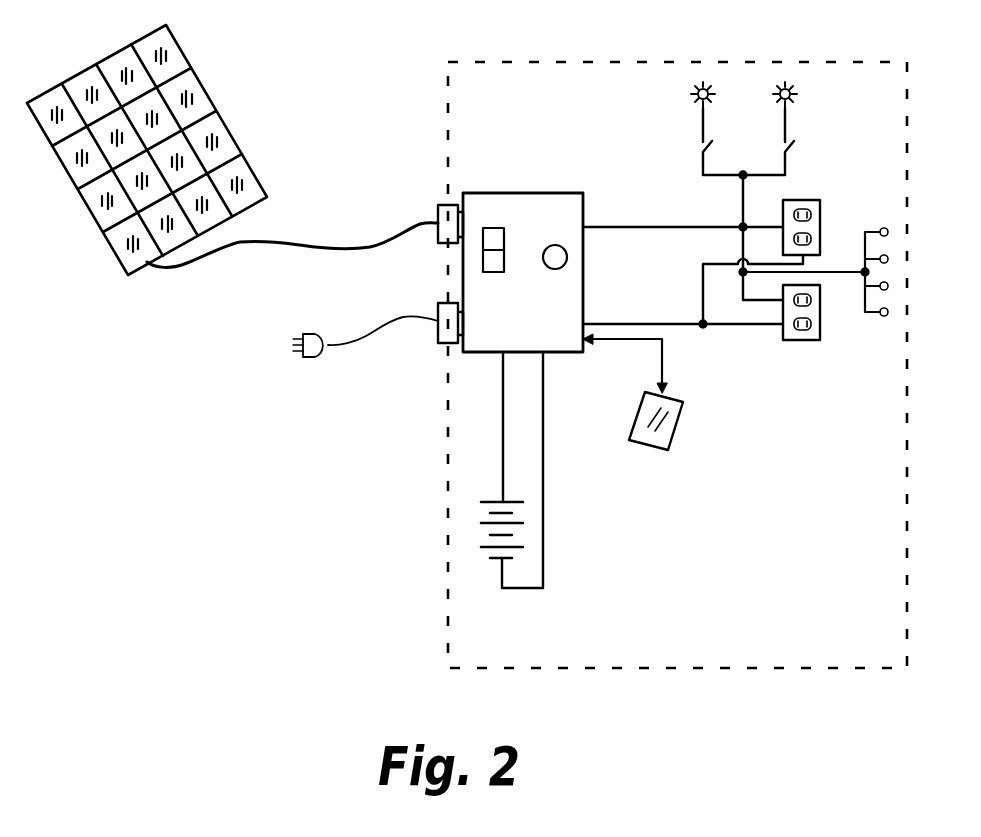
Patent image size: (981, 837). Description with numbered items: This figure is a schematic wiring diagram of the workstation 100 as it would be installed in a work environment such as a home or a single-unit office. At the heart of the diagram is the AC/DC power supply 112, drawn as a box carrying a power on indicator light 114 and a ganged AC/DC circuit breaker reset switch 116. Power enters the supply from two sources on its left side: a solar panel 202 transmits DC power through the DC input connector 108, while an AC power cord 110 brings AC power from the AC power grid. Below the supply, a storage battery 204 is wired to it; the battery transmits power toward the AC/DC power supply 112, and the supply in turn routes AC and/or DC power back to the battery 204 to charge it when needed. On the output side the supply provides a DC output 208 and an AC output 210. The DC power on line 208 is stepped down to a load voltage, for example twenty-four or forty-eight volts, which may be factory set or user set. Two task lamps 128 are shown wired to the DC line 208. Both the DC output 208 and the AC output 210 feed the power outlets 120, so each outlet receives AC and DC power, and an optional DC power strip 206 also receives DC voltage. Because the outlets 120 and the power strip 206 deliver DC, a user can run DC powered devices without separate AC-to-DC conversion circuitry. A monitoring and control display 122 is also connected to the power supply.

The workstation 100 is at (500, 62).
The solar panel 202 is at (205, 84).
The DC input connector 108 is at (440, 212).
The AC power cord 110 is at (384, 324).
The AC/DC power supply 112 is at (518, 193).
The ganged AC/DC circuit breaker reset switch 116 is at (490, 228).
The power on indicator light 114 is at (555, 245).
The DC output 208 is at (679, 226).
The AC output 210 is at (661, 321).
The task lamps 128 is at (703, 81).
The power outlets 120 is at (824, 198).
The DC power strip 206 is at (881, 316).
The monitoring and control display 122 is at (686, 419).
The storage battery 204 is at (490, 548).